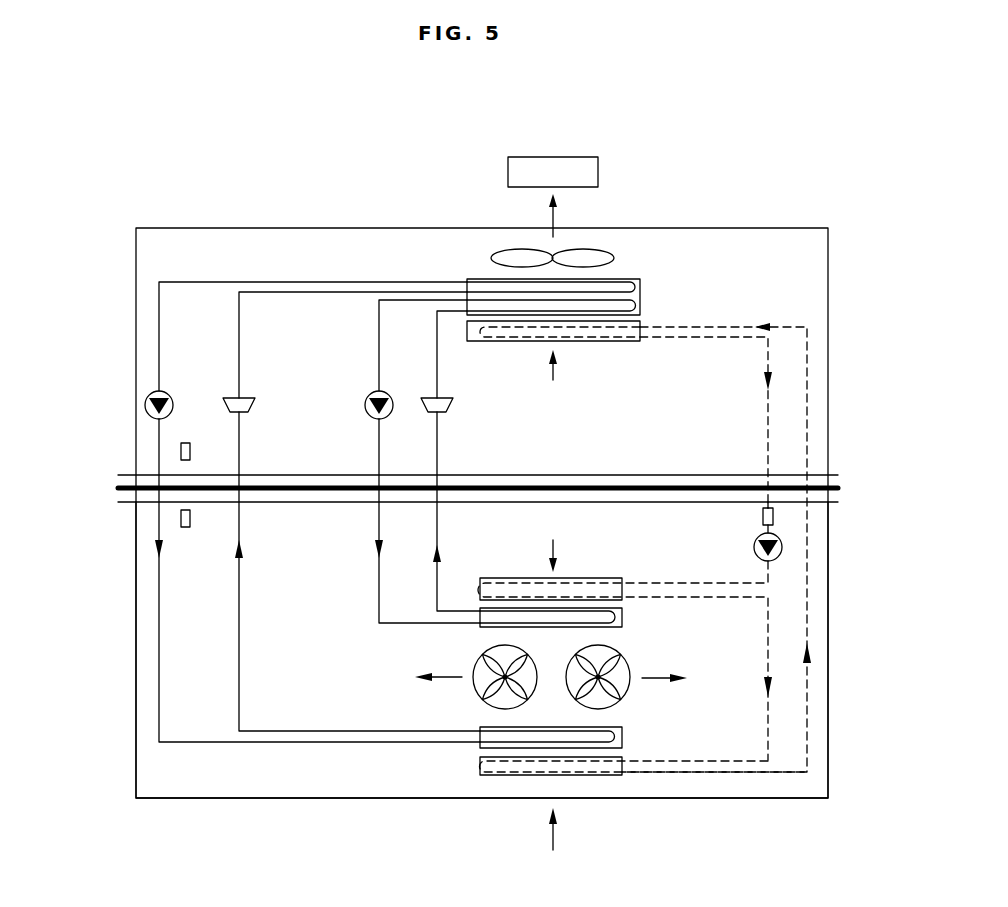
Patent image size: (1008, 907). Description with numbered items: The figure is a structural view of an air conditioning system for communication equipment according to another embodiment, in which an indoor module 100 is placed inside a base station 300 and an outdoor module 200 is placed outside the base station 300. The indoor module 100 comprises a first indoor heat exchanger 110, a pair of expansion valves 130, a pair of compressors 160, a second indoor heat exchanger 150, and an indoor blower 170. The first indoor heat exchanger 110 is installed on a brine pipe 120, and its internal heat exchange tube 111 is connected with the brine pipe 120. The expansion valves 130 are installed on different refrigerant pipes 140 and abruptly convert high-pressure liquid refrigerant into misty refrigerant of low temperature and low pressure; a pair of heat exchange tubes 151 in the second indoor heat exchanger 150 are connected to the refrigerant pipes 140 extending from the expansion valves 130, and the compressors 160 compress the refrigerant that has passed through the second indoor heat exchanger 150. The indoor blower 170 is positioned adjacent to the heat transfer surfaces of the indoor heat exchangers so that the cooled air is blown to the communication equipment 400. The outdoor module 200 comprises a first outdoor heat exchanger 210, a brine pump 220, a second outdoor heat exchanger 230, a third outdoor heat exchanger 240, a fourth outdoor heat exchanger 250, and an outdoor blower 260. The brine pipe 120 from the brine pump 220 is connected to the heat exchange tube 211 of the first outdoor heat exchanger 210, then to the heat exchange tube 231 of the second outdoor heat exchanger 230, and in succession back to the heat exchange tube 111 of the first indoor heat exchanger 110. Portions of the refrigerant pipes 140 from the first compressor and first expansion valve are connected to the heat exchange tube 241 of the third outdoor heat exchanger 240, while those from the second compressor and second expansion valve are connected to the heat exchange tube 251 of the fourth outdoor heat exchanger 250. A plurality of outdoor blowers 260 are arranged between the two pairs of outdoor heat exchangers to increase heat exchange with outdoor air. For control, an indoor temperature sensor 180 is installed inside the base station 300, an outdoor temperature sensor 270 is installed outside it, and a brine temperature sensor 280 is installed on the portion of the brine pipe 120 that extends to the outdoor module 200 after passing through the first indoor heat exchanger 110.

The indoor module 100 is at (757, 228).
The first indoor heat exchanger 110 is at (640, 321).
The heat exchange tube 111 is at (590, 341).
The brine pipe 120 is at (733, 327).
The expansion valves 130 is at (432, 397).
The refrigerant pipes 140 is at (437, 322).
The second indoor heat exchanger 150 is at (470, 279).
The heat exchange tubes 151 is at (517, 280).
The compressors 160 is at (370, 393).
The indoor blower 170 is at (590, 250).
The indoor temperature sensor 180 is at (181, 450).
The outdoor module 200 is at (753, 798).
The first outdoor heat exchanger 210 is at (615, 583).
The heat exchange tube 211 is at (620, 597).
The brine pump 220 is at (783, 550).
The second outdoor heat exchanger 230 is at (622, 775).
The heat exchange tube 231 is at (543, 768).
The third outdoor heat exchanger 240 is at (480, 608).
The heat exchange tube 241 is at (513, 625).
The fourth outdoor heat exchanger 250 is at (480, 748).
The heat exchange tube 251 is at (500, 737).
The outdoor blower 260 is at (527, 697).
The outdoor temperature sensor 270 is at (181, 518).
The brine temperature sensor 280 is at (773, 517).
The base station 300 is at (787, 133).
The communication equipment 400 is at (575, 157).